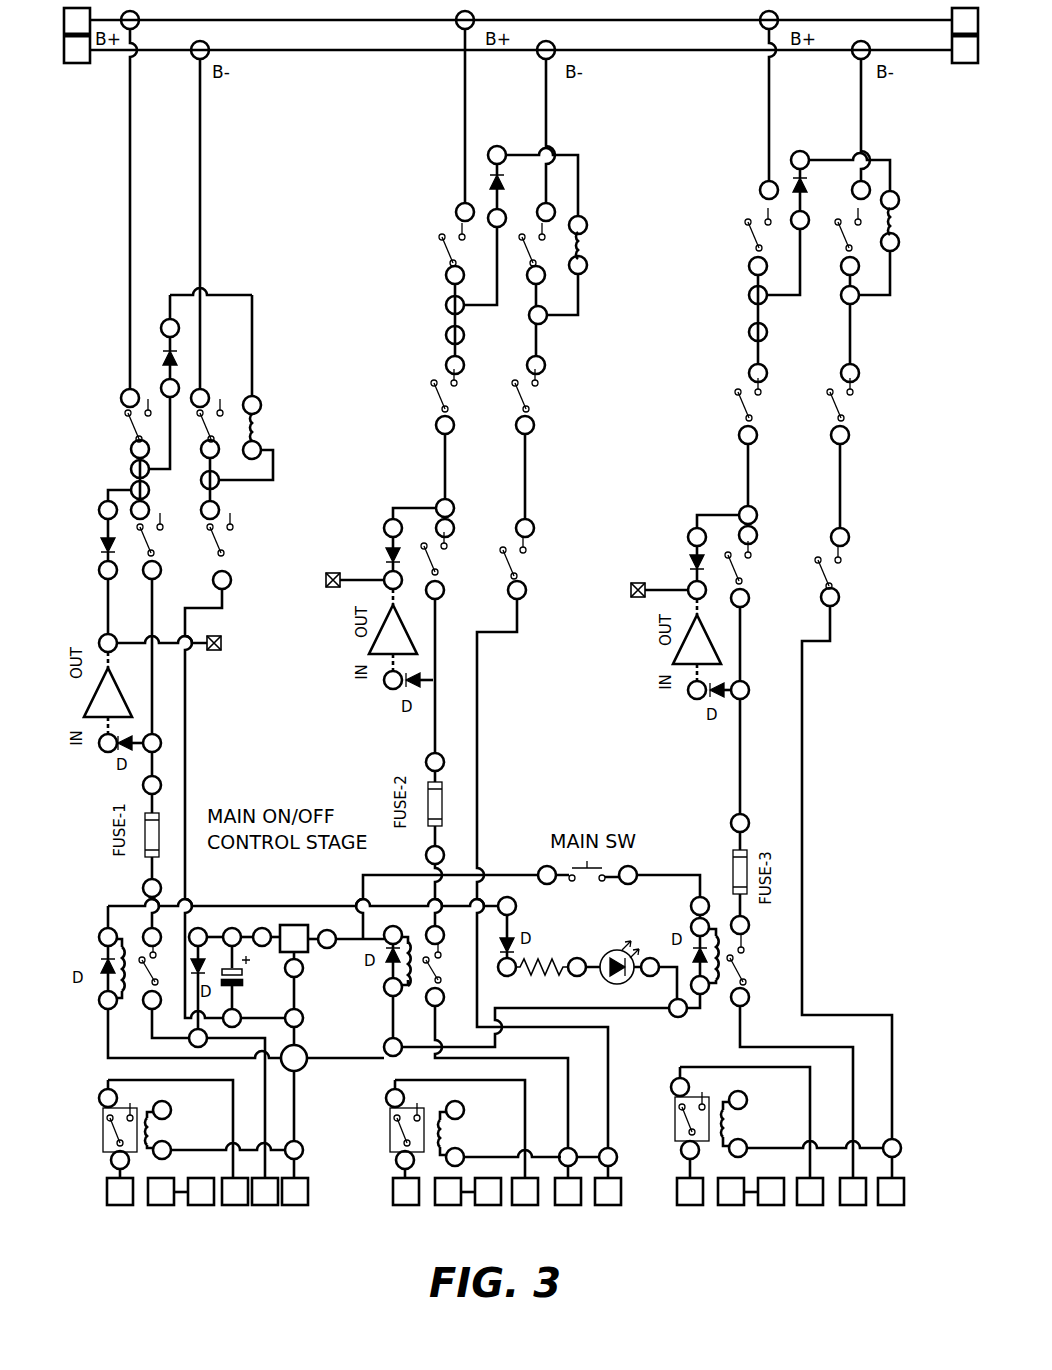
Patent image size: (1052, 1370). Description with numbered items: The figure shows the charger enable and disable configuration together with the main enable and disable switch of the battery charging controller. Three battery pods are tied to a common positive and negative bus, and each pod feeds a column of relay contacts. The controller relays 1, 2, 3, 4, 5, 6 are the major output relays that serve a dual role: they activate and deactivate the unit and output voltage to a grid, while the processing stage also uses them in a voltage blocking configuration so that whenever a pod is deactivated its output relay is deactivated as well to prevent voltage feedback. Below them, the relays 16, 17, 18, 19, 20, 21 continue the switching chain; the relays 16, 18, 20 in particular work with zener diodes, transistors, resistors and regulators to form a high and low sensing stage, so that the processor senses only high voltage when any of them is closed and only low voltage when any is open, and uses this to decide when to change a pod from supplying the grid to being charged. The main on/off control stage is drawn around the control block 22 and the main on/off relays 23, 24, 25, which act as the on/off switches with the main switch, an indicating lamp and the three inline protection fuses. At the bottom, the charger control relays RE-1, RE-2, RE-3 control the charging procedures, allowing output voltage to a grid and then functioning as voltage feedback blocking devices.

The controller relay 1 is at (118, 407).
The controller relay 2 is at (252, 422).
The controller relay 3 is at (440, 243).
The controller relay 4 is at (535, 235).
The controller relay 5 is at (745, 228).
The controller relay 6 is at (843, 227).
The sensing relay 16 is at (161, 548).
The controller relay 17 is at (232, 549).
The sensing relay 18 is at (448, 549).
The controller relay 19 is at (526, 557).
The sensing relay 20 is at (752, 572).
The controller relay 21 is at (845, 578).
The main on/off control module 22 is at (289, 915).
The main on/off relay 23 is at (155, 974).
The main on/off relay 24 is at (442, 973).
The main on/off relay 25 is at (748, 977).
The charger control relay RE-1 is at (175, 1132).
The charger control relay RE-2 is at (474, 1132).
The charger control relay RE-3 is at (759, 1126).